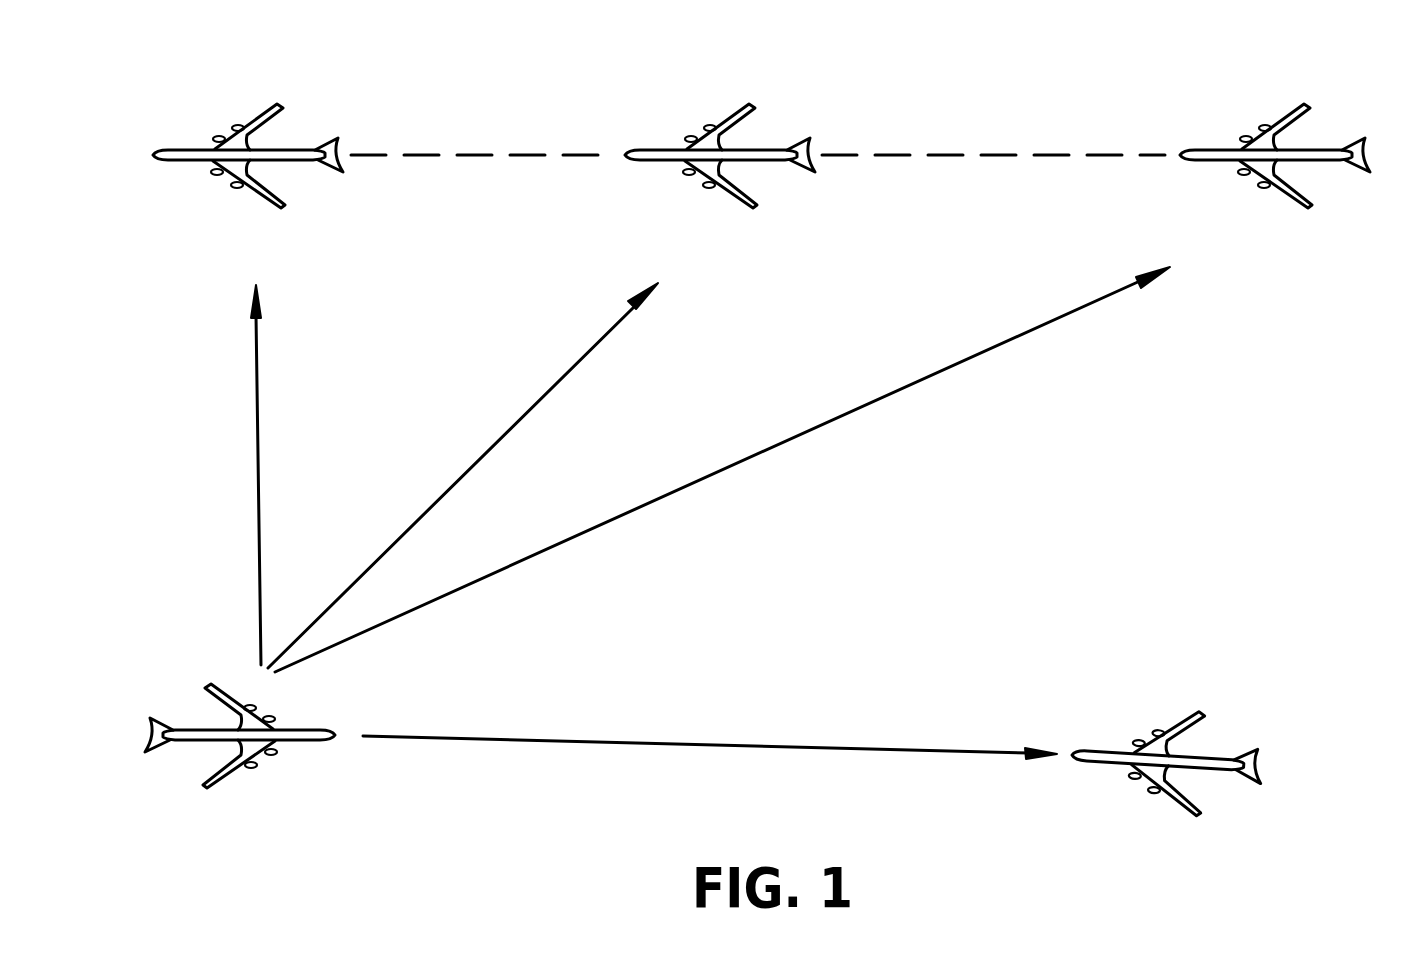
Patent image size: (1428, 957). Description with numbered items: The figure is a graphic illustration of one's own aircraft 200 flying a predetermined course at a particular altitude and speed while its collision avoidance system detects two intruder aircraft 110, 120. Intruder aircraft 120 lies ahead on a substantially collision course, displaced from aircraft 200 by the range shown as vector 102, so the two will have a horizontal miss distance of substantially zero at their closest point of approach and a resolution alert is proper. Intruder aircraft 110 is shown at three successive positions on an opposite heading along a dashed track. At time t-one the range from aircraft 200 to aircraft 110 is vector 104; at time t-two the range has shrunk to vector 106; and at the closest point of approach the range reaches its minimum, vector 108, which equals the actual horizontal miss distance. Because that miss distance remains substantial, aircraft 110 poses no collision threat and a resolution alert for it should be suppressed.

The vector 102 is at (745, 745).
The vector 104 is at (1027, 332).
The vector 106 is at (612, 330).
The vector 108 is at (258, 357).
The intruder aircraft 110 is at (297, 148).
The intruder aircraft 120 is at (1217, 760).
The own aircraft 200 is at (300, 743).